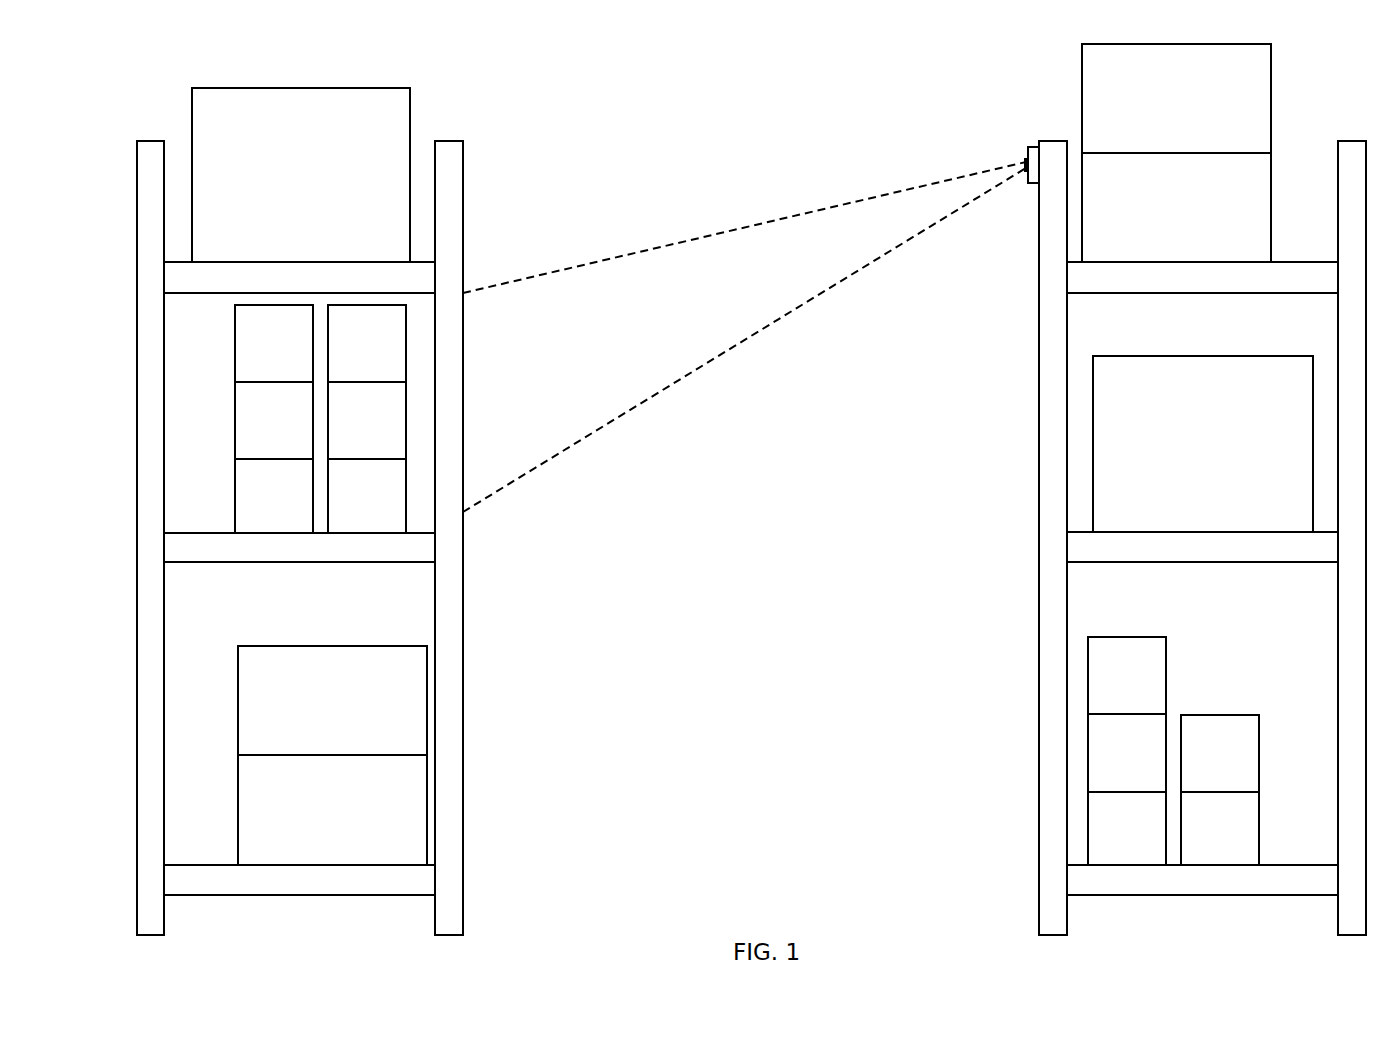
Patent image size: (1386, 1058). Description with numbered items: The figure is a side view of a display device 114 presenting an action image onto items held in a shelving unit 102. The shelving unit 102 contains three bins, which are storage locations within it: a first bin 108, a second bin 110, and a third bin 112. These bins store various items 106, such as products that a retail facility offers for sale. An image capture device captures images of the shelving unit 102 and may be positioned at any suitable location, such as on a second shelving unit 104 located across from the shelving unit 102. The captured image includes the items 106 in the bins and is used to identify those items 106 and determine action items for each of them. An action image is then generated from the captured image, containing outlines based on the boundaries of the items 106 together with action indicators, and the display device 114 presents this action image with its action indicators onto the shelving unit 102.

The shelving unit 102 is at (361, 501).
The second shelving unit 104 is at (1010, 89).
The items 106 is at (192, 117).
The first bin 108 is at (463, 213).
The second bin 110 is at (463, 432).
The third bin 112 is at (463, 755).
The display device 114 is at (1027, 153).